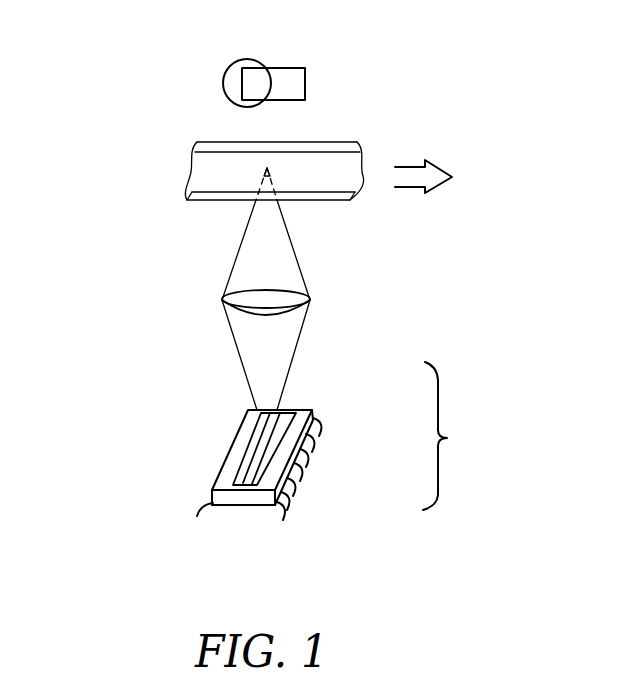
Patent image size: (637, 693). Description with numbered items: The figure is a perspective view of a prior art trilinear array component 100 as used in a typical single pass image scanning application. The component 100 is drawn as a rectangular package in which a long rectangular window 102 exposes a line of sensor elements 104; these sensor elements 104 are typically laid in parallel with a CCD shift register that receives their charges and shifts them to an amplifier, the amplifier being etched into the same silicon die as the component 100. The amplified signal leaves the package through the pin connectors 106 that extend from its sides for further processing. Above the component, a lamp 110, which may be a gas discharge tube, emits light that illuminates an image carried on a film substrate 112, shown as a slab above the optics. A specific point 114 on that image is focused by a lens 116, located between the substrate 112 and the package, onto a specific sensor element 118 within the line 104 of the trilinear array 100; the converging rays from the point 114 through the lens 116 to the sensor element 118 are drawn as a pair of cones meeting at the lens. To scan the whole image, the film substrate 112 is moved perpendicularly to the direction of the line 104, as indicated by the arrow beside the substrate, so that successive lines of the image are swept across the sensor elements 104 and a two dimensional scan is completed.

The trilinear array component 100 is at (457, 436).
The window 102 is at (292, 410).
The line of sensor elements 104 is at (262, 445).
The pin connectors 106 is at (288, 508).
The lamp 110 is at (232, 72).
The film substrate 112 is at (208, 168).
The point 114 is at (265, 170).
The lens 116 is at (222, 301).
The sensor element 118 is at (267, 433).